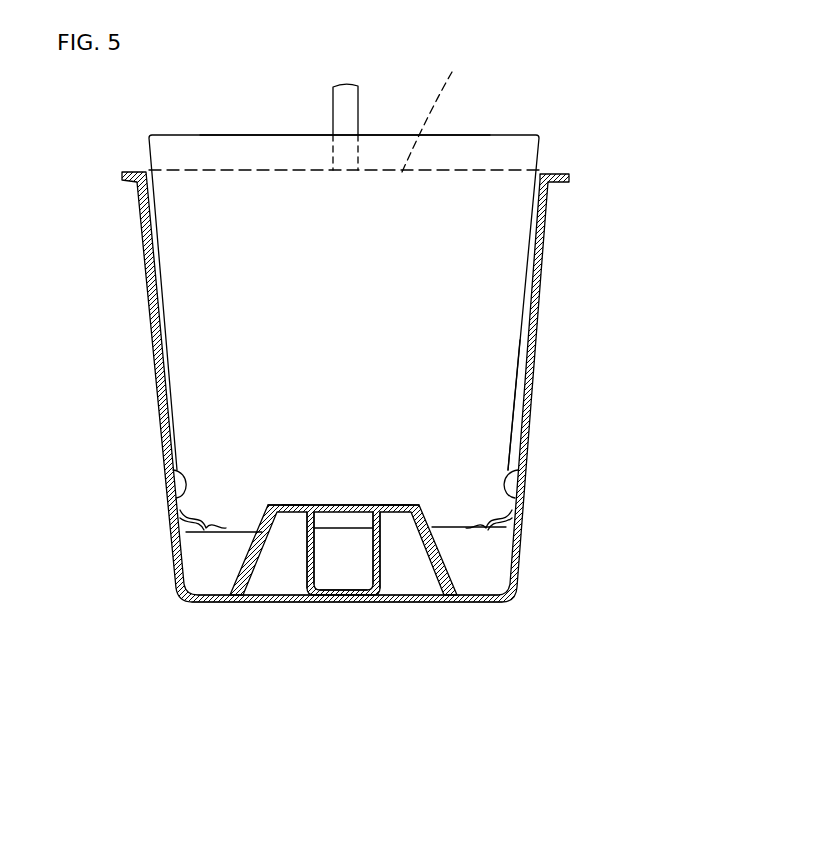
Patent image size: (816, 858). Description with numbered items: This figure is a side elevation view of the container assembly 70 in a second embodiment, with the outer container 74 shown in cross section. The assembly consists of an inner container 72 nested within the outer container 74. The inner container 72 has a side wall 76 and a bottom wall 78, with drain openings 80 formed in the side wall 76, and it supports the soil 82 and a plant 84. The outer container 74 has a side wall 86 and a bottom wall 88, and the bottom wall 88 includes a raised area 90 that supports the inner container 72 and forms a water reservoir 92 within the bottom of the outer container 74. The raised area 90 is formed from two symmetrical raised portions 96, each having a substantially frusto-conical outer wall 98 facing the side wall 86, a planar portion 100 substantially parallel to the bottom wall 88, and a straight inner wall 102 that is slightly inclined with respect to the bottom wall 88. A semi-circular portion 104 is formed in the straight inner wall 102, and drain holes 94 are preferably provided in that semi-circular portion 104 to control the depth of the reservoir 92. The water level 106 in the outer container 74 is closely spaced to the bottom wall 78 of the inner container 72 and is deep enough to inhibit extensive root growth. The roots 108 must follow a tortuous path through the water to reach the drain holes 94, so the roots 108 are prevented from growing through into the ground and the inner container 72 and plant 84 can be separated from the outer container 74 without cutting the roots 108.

The container assembly 70 is at (595, 160).
The inner container 72 is at (507, 134).
The outer container 74 is at (546, 243).
The side wall 76 is at (543, 148).
The bottom wall 78 is at (431, 587).
The drain openings 80 is at (176, 482).
The soil 82 is at (433, 109).
The plant 84 is at (360, 100).
The side wall 86 is at (538, 298).
The bottom wall 88 is at (200, 604).
The raised area 90 is at (273, 506).
The water reservoir 92 is at (203, 552).
The drain holes 94 is at (327, 503).
The raised portions 96 is at (236, 571).
The frusto-conical outer wall 98 is at (232, 518).
The planar portion 100 is at (300, 503).
The straight inner wall 102 is at (330, 592).
The semi-circular portion 104 is at (318, 592).
The water level 106 is at (341, 522).
The roots 108 is at (185, 520).